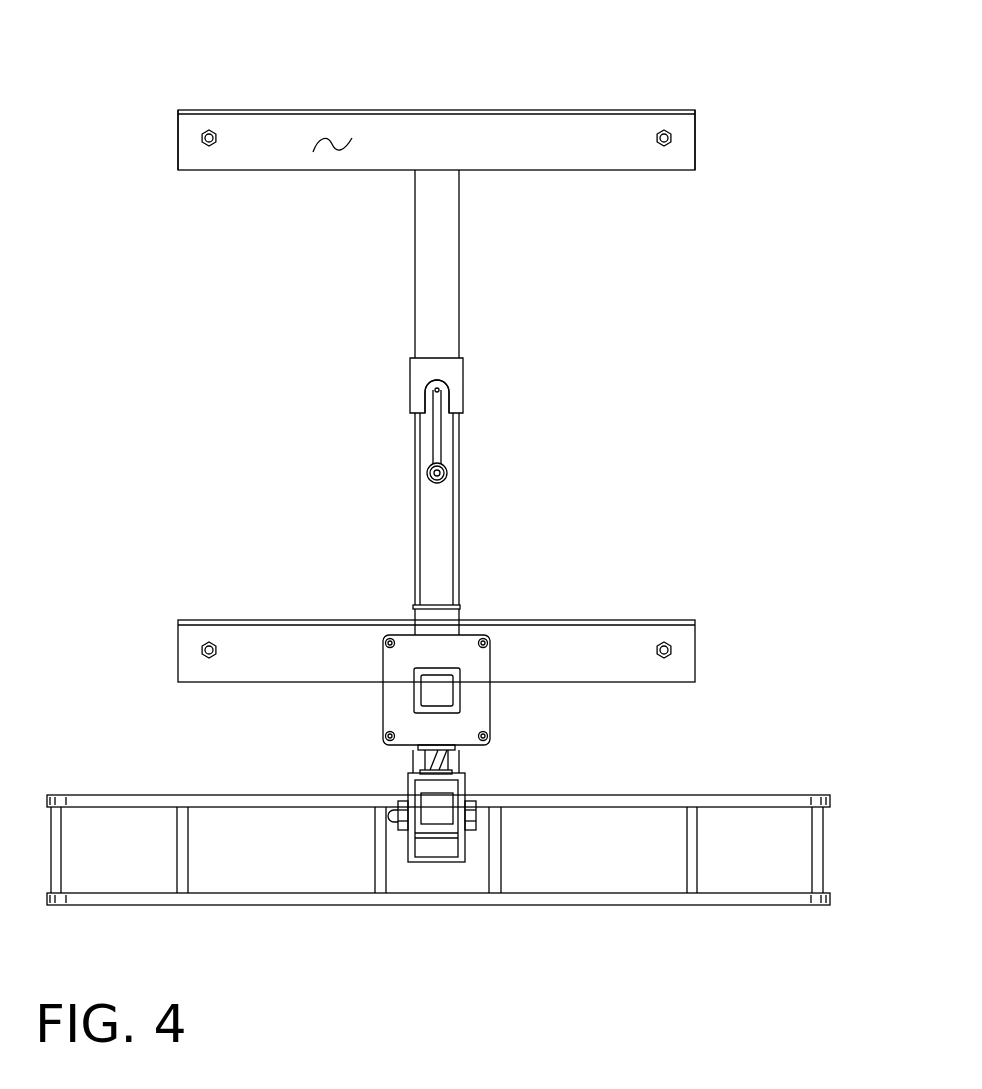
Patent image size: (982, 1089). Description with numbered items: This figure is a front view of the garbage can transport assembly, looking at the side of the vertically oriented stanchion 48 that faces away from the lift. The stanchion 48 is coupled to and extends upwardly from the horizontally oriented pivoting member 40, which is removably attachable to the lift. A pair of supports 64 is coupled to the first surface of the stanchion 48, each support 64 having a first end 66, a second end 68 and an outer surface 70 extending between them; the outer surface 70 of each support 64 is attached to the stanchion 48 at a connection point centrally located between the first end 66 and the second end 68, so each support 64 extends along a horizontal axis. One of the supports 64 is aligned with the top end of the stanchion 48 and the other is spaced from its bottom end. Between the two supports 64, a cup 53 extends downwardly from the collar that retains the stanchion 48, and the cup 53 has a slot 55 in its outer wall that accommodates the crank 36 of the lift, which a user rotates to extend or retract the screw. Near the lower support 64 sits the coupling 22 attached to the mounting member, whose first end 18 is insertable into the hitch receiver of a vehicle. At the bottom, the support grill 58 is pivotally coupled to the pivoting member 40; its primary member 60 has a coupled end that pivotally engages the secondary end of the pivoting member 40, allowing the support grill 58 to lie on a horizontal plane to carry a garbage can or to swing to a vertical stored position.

The first end 18 is at (440, 675).
The coupling 22 is at (418, 652).
The crank 36 is at (441, 438).
The pivoting member 40 is at (408, 773).
The stanchion 48 is at (437, 264).
The cup 53 is at (417, 368).
The slot 55 is at (457, 398).
The support grill 58 is at (706, 778).
The primary member 60 is at (438, 835).
The supports 64 is at (533, 119).
The first end 66 is at (695, 130).
The second end 68 is at (178, 141).
The outer surface 70 is at (333, 140).